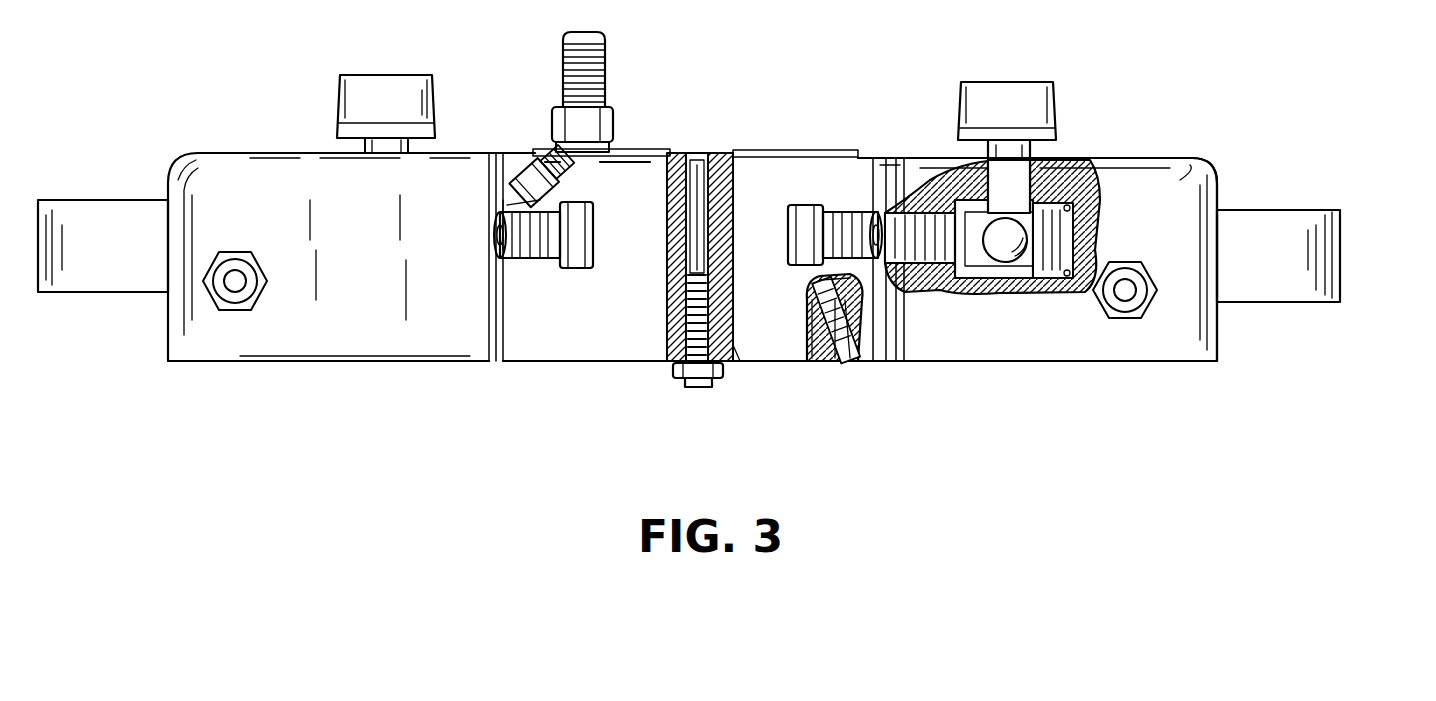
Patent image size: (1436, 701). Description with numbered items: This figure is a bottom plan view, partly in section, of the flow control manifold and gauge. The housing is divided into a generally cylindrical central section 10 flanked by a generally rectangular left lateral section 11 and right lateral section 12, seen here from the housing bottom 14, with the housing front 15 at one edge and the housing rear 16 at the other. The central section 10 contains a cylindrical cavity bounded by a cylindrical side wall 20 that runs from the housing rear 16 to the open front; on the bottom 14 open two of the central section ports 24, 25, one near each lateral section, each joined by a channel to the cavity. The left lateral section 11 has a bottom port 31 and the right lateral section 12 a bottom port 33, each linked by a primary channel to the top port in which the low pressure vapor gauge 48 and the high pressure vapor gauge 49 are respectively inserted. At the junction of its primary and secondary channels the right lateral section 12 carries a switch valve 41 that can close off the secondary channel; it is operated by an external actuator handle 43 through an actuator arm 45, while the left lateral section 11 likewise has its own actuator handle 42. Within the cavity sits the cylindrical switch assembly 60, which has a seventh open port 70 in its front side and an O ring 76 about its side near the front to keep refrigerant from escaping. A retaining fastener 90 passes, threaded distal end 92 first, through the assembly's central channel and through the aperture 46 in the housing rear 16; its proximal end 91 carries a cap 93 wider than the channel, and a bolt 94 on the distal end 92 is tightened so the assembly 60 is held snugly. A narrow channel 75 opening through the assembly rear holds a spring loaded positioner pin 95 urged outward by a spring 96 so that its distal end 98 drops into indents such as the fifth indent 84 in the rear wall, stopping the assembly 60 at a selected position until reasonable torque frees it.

The central section 10 is at (820, 150).
The left lateral section 11 is at (210, 152).
The right lateral section 12 is at (1195, 160).
The housing bottom 14 is at (372, 330).
The housing front 15 is at (305, 150).
The housing rear 16 is at (320, 362).
The cylindrical side wall 20 is at (540, 150).
The central section bottom port 24 is at (568, 268).
The central section bottom port 25 is at (790, 255).
The left lateral bottom port 31 is at (237, 308).
The right lateral bottom port 33 is at (1125, 300).
The switch valve 41 is at (1030, 285).
The actuator handle 42 is at (410, 82).
The actuator handle 43 is at (1060, 100).
The actuator arm 45 is at (1060, 170).
The aperture 46 is at (735, 355).
The low pressure vapor gauge 48 is at (125, 205).
The high pressure vapor gauge 49 is at (1335, 238).
The switch assembly 60 is at (560, 178).
The seventh open port 70 is at (612, 128).
The narrow channel 75 is at (845, 350).
The O ring 76 is at (537, 193).
The fifth indent 84 is at (835, 365).
The retaining fastener 90 is at (692, 255).
The proximal end 91 is at (722, 150).
The threaded distal end 92 is at (695, 388).
The cap 93 is at (678, 153).
The bolt 94 is at (672, 370).
The spring loaded positioner pin 95 is at (855, 320).
The spring 96 is at (862, 297).
The distal end 98 is at (822, 358).